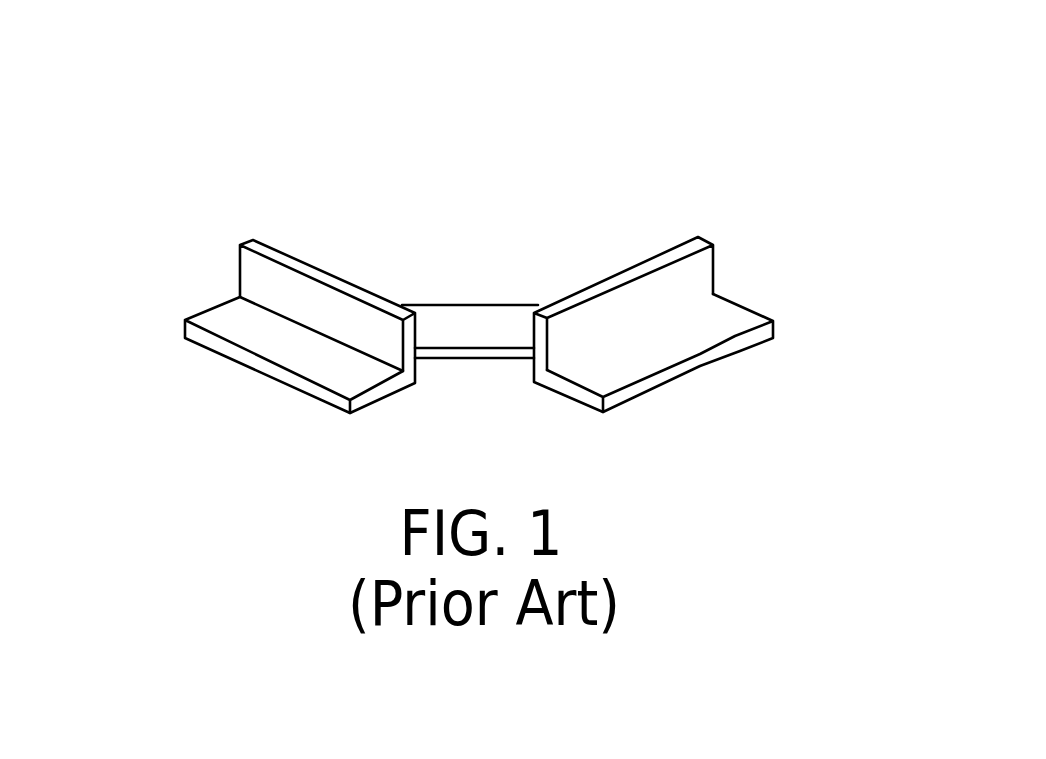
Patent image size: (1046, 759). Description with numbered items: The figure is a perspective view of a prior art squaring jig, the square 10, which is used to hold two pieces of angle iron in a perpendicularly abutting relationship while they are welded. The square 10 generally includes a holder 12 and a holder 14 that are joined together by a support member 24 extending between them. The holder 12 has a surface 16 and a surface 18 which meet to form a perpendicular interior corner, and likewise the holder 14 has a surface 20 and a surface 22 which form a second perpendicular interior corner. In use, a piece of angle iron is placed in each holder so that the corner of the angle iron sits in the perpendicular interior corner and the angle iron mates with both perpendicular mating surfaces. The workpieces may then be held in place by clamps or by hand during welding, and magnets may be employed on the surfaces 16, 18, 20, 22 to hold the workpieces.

The square 10 is at (633, 173).
The holder 12 is at (250, 238).
The holder 14 is at (698, 232).
The surface 16 is at (285, 298).
The surface 18 is at (225, 322).
The surface 20 is at (698, 273).
The surface 22 is at (740, 325).
The support member 24 is at (482, 323).